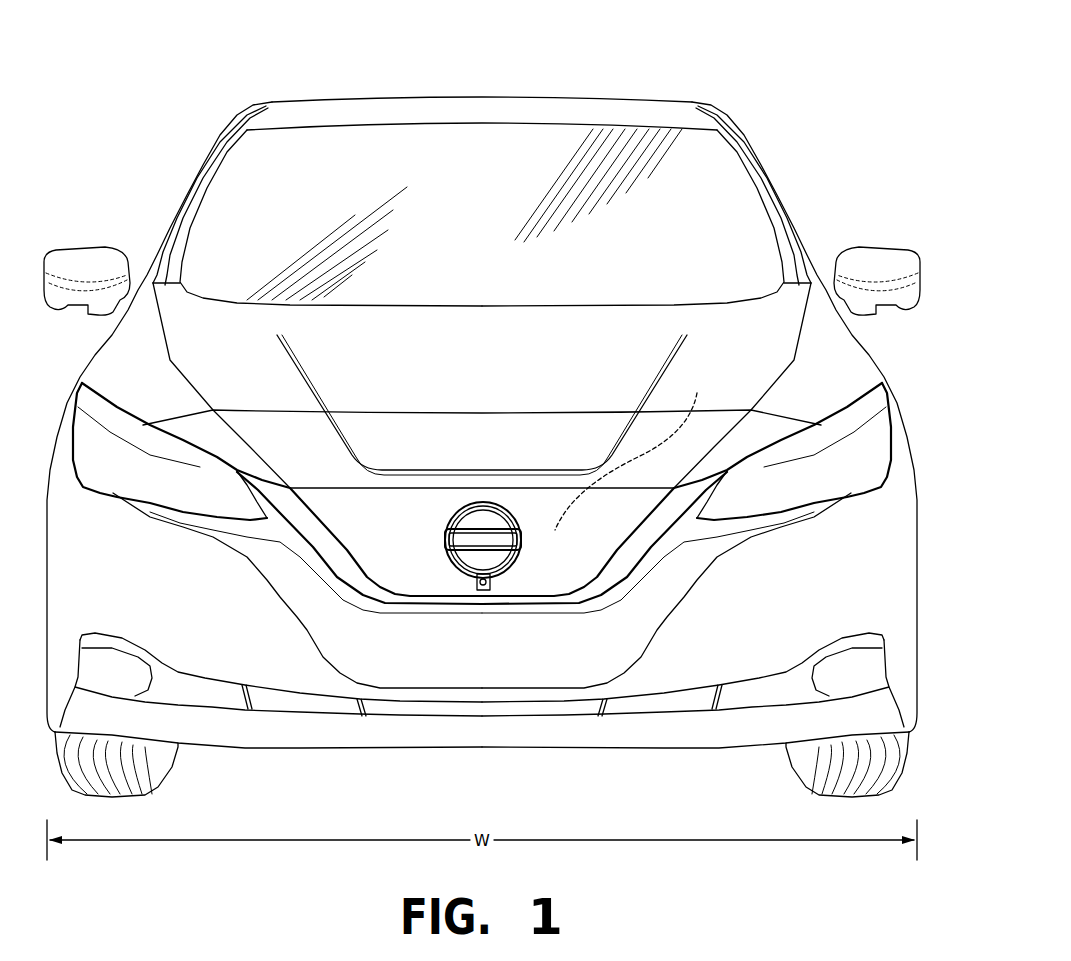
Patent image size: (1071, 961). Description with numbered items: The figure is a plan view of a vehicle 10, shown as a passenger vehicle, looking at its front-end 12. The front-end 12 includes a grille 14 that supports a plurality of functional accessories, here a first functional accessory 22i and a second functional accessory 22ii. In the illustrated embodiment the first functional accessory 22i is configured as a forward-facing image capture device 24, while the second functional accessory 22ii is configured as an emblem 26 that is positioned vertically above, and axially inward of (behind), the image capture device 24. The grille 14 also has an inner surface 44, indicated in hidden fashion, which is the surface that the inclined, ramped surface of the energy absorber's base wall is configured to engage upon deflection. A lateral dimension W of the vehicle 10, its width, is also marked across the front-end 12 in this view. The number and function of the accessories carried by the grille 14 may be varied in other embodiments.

The vehicle 10 is at (819, 51).
The front-end 12 is at (932, 478).
The grille 14 is at (654, 527).
The first functional accessory 22i is at (515, 587).
The second functional accessory 22ii is at (528, 566).
The image capture device 24 is at (466, 581).
The emblem 26 is at (426, 517).
The inner surface 44 is at (635, 449).